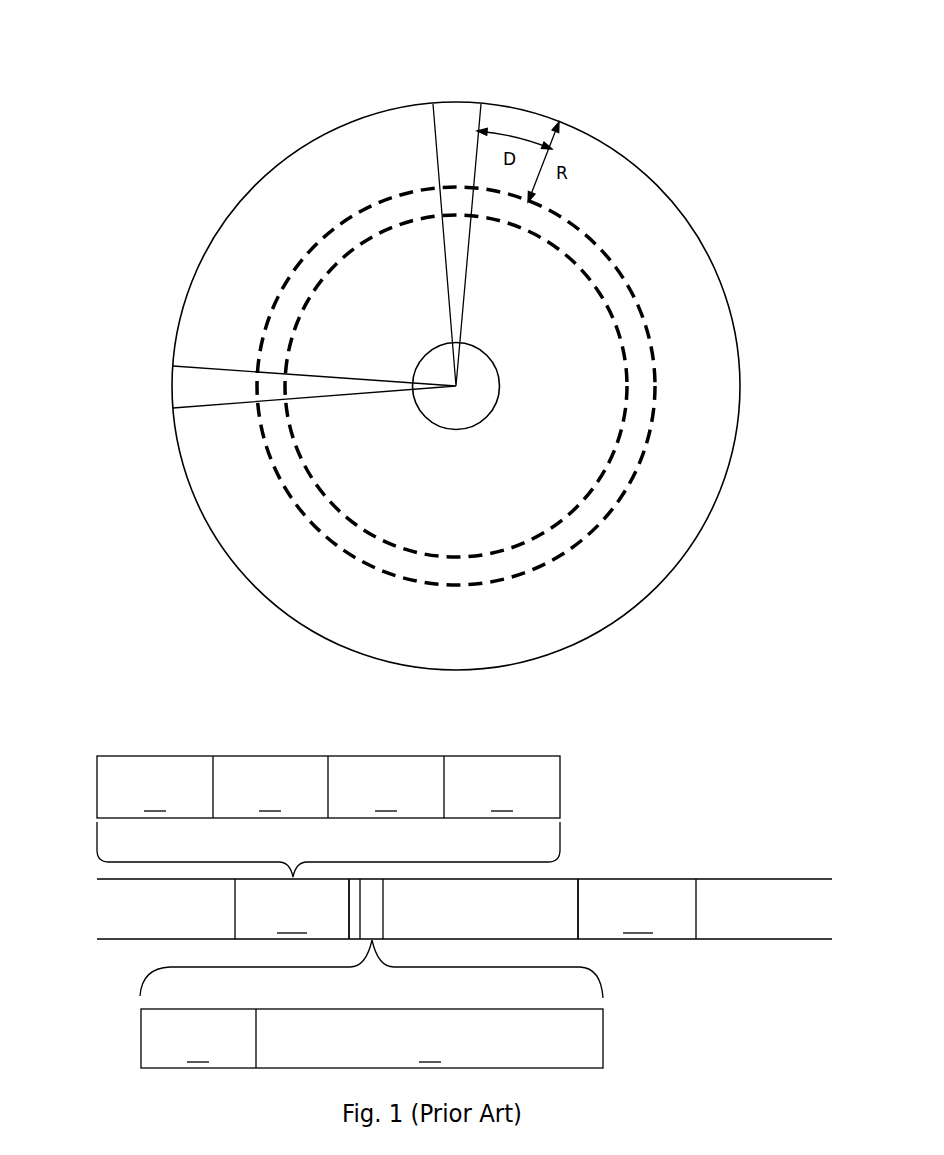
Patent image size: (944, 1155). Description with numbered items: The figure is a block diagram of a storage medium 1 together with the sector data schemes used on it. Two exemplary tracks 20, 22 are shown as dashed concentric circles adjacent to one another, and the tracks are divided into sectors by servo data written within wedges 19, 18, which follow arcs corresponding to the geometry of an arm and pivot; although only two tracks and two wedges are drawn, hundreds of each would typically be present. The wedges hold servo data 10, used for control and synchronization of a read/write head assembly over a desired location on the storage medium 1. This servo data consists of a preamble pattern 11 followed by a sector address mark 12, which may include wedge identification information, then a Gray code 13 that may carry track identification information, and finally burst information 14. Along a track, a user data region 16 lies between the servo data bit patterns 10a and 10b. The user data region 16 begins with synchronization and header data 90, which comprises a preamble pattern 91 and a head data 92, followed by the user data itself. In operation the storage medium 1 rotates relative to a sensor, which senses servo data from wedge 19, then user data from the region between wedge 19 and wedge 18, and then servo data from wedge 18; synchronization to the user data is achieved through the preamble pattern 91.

The storage medium 1 is at (181, 74).
The servo data 10 is at (328, 785).
The servo data bit pattern 10a is at (292, 909).
The servo data bit pattern 10b is at (563, 872).
The preamble pattern 11 is at (164, 787).
The sector address mark 12 is at (289, 787).
The Gray code 13 is at (392, 787).
The burst information 14 is at (502, 792).
The user data region 16 is at (464, 886).
The wedge 18 is at (457, 105).
The wedge 19 is at (178, 391).
The track 20 is at (595, 285).
The track 22 is at (585, 236).
The header data 90 is at (407, 1004).
The preamble pattern 91 is at (207, 1038).
The head data 92 is at (430, 1043).